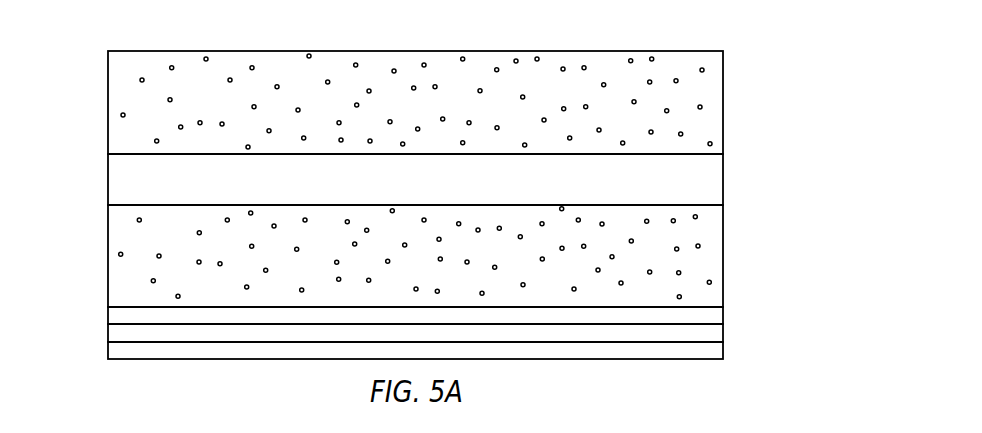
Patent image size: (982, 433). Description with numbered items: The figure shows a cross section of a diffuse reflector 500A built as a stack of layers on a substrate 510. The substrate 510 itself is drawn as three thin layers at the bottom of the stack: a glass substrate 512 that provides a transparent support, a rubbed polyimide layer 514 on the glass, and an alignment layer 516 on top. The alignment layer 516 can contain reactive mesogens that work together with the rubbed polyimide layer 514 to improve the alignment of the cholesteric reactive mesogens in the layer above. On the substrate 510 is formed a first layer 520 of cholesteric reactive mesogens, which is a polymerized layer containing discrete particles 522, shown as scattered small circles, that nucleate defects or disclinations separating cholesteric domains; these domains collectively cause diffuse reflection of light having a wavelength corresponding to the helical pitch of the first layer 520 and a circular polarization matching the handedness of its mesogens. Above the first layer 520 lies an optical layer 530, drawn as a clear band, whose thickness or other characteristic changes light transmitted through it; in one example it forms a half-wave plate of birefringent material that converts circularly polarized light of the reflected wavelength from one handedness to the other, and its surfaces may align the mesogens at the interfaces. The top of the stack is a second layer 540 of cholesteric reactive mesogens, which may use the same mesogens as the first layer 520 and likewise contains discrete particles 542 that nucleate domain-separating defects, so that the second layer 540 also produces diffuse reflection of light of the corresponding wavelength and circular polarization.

The diffuse reflector 500A is at (139, 27).
The substrate 510 is at (100, 307).
The glass substrate 512 is at (725, 352).
The rubbed polyimide layer 514 is at (725, 333).
The alignment layer 516 is at (725, 315).
The first layer of cholesteric reactive mesogens 520 is at (725, 220).
The discrete particles 522 is at (118, 254).
The optical layer 530 is at (725, 178).
The second layer of cholesteric reactive mesogens 540 is at (725, 83).
The discrete particles 542 is at (120, 115).